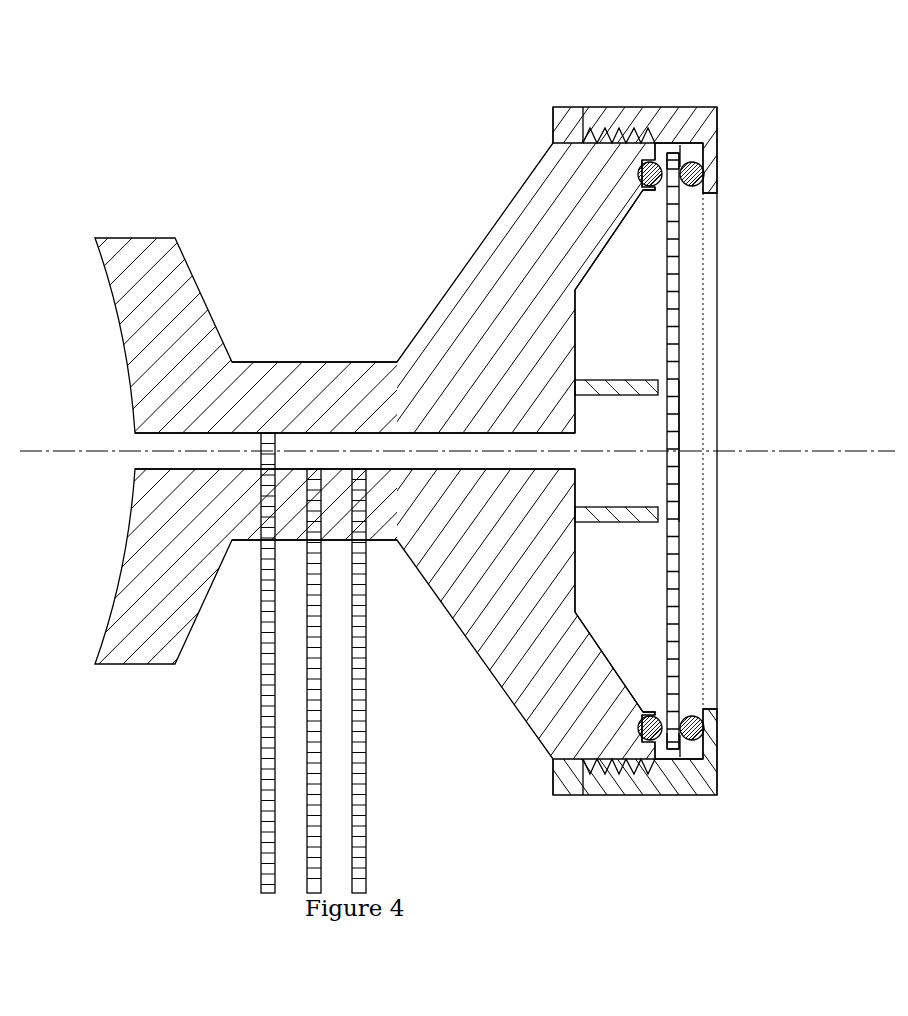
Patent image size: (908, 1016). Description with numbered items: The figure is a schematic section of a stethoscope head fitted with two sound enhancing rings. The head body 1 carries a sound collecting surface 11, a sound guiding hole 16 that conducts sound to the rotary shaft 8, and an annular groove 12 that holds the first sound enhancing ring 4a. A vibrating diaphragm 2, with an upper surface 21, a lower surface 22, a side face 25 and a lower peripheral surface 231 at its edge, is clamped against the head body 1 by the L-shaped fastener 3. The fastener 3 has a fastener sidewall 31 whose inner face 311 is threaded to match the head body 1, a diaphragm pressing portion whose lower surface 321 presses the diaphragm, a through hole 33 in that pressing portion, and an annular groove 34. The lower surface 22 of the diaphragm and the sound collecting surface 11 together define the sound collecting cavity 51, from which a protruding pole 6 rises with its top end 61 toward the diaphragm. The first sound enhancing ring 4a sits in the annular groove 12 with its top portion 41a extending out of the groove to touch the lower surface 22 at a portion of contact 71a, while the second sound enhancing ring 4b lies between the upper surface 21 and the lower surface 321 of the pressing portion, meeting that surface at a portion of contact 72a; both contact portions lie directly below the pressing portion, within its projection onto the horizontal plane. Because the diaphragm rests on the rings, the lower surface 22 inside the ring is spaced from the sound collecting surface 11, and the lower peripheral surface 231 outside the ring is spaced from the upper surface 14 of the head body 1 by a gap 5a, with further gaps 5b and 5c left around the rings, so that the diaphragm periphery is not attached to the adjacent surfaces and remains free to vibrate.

The head body 1 is at (420, 440).
The vibrating diaphragm 2 is at (585, 352).
The fastener 3 is at (628, 112).
The sound enhancing ring 4a is at (650, 187).
The sound enhancing ring 4b is at (700, 172).
The gap 5a is at (556, 112).
The gap 5b is at (688, 160).
The gap 5c is at (670, 150).
The protruding pole 6 is at (568, 322).
The rotary shaft 8 is at (270, 752).
The sound collecting surface 11 is at (598, 266).
The annular groove 12 is at (645, 192).
The upper surface 14 is at (655, 205).
The sound guiding hole 16 is at (430, 455).
The upper surface 21 is at (682, 262).
The lower surface 22 is at (673, 425).
The side face 25 is at (673, 150).
The fastener sidewall 31 is at (600, 110).
The through hole 33 is at (795, 503).
The annular groove 34 is at (712, 178).
The top portion 41a is at (658, 148).
The sound collecting cavity 51 is at (413, 383).
The top end 61 is at (635, 378).
The portion of contact 71a is at (645, 172).
The portion of contact 72a is at (810, 182).
The lower peripheral surface of vibrating diaphragm 231 is at (590, 128).
The inner face of fastener sidewall 311 is at (690, 155).
The lower surface of diaphragm pressing portion 321 is at (703, 167).